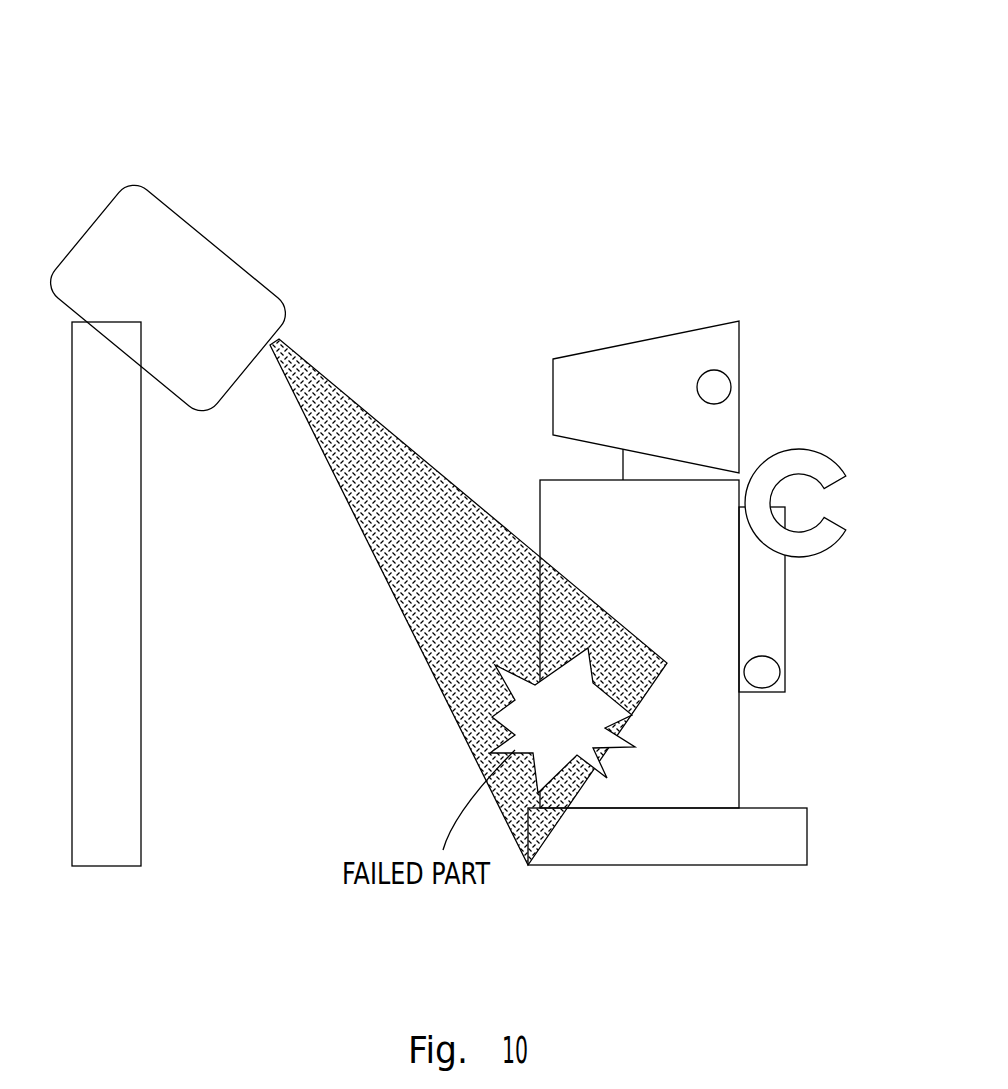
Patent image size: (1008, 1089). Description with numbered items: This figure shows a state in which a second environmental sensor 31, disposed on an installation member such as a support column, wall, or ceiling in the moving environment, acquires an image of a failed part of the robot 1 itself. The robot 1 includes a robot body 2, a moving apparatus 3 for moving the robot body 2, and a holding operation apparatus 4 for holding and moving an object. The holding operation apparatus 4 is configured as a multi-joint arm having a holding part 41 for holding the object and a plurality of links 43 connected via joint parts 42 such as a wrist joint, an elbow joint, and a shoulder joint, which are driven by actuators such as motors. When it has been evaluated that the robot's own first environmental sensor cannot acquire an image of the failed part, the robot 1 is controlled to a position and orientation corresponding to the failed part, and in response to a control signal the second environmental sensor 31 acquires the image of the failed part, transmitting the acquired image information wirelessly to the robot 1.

The robot 1 is at (815, 234).
The robot body 2 is at (733, 780).
The moving apparatus 3 is at (800, 838).
The holding operation apparatus 4 is at (803, 571).
The second environmental sensor 31 is at (136, 186).
The holding part 41 is at (807, 457).
The joint parts 42 is at (762, 688).
The links 43 is at (770, 617).